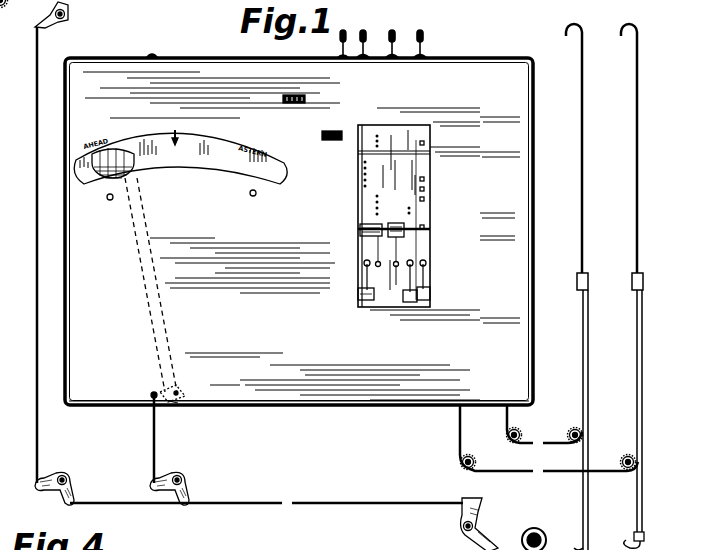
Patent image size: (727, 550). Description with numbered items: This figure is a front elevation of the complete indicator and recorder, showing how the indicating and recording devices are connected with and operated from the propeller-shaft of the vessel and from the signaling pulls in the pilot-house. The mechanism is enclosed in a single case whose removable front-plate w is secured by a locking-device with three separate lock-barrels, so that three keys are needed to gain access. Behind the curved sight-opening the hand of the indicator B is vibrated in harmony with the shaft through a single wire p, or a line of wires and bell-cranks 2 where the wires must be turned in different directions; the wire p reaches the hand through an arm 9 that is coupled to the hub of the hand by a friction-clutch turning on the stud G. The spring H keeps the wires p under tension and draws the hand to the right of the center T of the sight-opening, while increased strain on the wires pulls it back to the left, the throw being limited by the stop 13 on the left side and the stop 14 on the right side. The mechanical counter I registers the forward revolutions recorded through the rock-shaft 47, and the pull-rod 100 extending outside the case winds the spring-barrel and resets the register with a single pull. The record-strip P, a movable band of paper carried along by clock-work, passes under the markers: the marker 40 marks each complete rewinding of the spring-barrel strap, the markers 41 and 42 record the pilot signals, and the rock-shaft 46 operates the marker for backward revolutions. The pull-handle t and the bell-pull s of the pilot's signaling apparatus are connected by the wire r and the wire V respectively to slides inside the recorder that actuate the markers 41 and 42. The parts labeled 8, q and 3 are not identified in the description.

The switch knob 8 is at (152, 53).
The pull-rod 100 is at (340, 47).
The mechanical counter I is at (306, 99).
The spring H is at (320, 135).
The center of the sight-opening T is at (170, 130).
The hand of the indicator B is at (134, 172).
The stop 13 is at (108, 200).
The stop 14 is at (251, 198).
The removable front-plate w is at (258, 419).
The record-strip P is at (360, 212).
The panel strip q is at (430, 190).
The rock-shaft 46 is at (364, 248).
The punch or marker 40 is at (400, 251).
The rock-shaft 47 is at (356, 286).
The marker 41 is at (430, 294).
The marker 42 is at (432, 283).
The wire p is at (36, 172).
The arm 9 is at (152, 393).
The stud G is at (186, 399).
The bell-crank 2 is at (267, 276).
The wire V is at (458, 425).
The wire r is at (506, 421).
The pipe coupling 3 is at (318, 236).
The pull-handle t is at (577, 275).
The bell-pull s is at (632, 274).